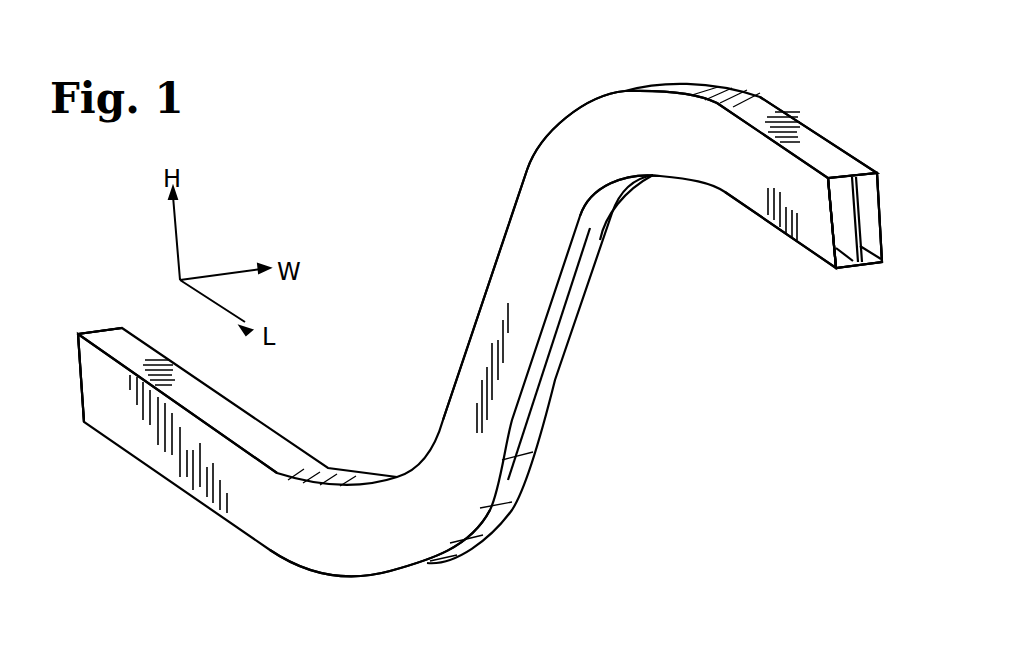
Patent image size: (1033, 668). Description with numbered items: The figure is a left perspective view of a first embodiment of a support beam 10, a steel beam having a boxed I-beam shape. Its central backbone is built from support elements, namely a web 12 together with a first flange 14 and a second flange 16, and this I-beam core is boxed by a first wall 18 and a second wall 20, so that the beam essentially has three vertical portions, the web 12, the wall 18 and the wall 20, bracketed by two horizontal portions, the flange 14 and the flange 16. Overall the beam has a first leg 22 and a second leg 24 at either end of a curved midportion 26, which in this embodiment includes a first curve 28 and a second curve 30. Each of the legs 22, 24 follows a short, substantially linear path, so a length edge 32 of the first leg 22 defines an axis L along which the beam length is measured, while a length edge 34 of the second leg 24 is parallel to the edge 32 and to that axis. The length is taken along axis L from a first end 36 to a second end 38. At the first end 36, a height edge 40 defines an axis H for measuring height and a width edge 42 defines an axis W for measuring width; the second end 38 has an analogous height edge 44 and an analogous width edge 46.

The support beam 10 is at (730, 53).
The web 12 is at (858, 193).
The first flange 14 is at (805, 140).
The second flange 16 is at (870, 268).
The first wall 18 is at (833, 220).
The second wall 20 is at (882, 245).
The first leg 22 is at (243, 411).
The second leg 24 is at (762, 213).
The curved midportion 26 is at (487, 293).
The first curve 28 is at (457, 570).
The second curve 30 is at (576, 94).
The length edge 32 is at (177, 484).
The length edge 34 is at (787, 234).
The first end 36 is at (96, 325).
The second end 38 is at (877, 275).
The height edge 40 is at (81, 392).
The width edge 42 is at (113, 326).
The height edge 44 is at (830, 203).
The width edge 46 is at (856, 172).